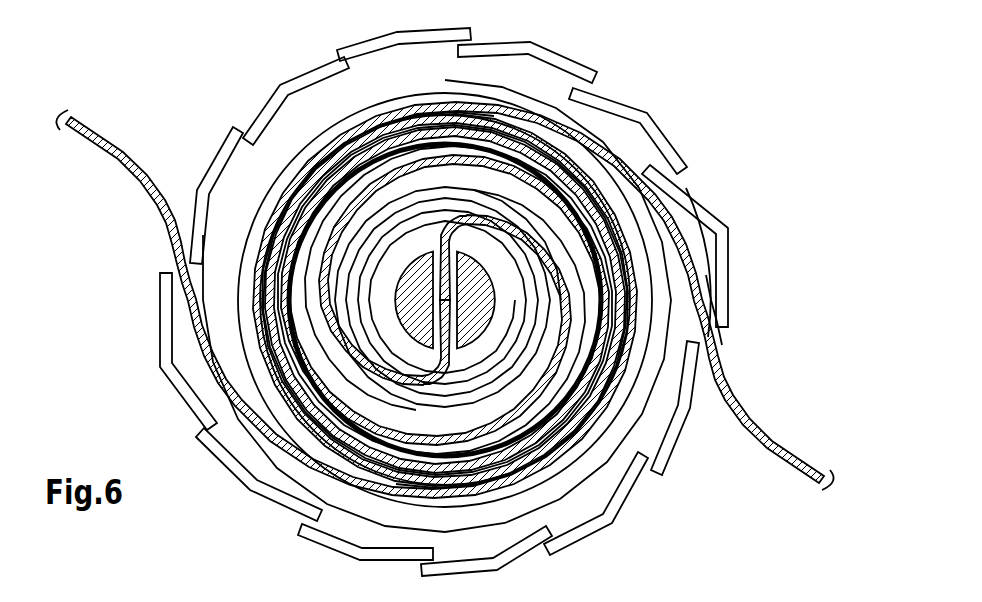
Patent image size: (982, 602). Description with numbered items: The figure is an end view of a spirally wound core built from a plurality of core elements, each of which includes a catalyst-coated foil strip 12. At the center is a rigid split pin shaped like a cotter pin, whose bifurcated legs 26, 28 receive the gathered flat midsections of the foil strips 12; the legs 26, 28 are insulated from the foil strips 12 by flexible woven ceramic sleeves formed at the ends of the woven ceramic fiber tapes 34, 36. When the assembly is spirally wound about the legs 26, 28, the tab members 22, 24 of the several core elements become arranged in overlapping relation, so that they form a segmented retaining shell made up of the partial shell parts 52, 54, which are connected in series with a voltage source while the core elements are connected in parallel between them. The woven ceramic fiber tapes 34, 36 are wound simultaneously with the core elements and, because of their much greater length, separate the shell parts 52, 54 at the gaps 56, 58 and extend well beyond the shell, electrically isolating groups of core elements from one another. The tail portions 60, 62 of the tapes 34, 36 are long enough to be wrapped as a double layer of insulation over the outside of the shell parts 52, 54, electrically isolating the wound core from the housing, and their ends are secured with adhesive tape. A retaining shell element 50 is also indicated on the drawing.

The foil strip 12 is at (288, 130).
The tab member 22 is at (345, 50).
The tab member 24 is at (670, 472).
The leg 26 is at (403, 305).
The leg 28 is at (497, 298).
The woven ceramic fiber tape 34 is at (762, 445).
The woven ceramic fiber tape 36 is at (122, 143).
The casing plate 50 is at (728, 212).
The partial shell part 52 is at (640, 66).
The partial shell part 54 is at (294, 552).
The gap 56 is at (710, 282).
The gap 58 is at (173, 300).
The tail portion 60 is at (808, 467).
The tail portion 62 is at (73, 143).